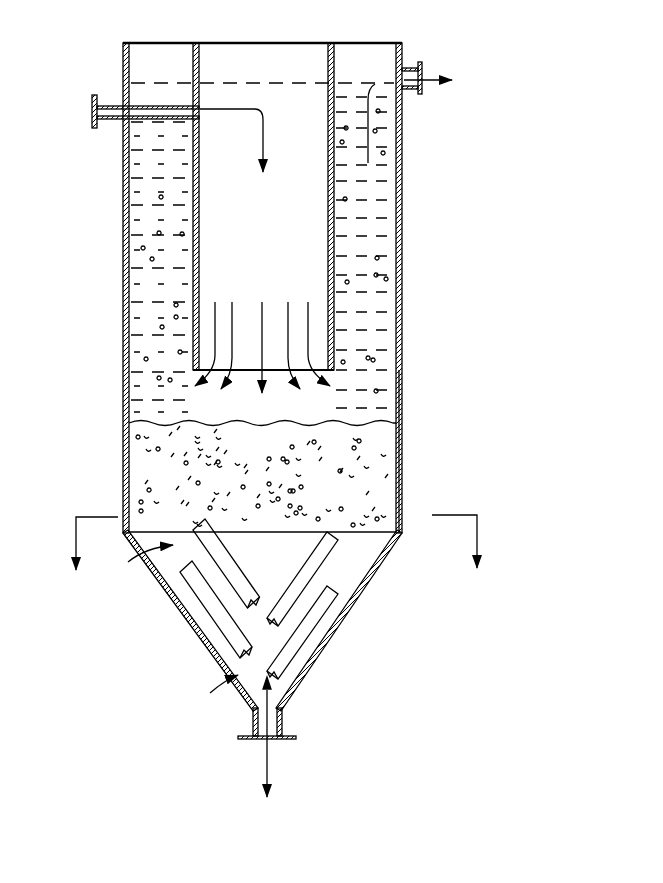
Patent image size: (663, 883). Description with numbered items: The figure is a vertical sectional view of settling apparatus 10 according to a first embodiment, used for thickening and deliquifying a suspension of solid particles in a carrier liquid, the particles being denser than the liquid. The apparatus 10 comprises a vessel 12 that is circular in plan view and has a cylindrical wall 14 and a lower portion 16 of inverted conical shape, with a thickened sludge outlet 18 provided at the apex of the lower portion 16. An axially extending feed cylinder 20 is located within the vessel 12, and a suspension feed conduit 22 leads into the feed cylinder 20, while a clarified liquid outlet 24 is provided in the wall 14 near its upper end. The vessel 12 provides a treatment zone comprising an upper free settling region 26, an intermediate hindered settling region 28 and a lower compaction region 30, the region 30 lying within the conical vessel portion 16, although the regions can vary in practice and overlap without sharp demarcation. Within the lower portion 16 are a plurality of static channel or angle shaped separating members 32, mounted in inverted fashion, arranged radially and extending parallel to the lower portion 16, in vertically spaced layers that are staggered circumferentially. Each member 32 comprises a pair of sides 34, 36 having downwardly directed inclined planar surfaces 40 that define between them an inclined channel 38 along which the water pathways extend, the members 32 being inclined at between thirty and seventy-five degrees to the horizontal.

The settling apparatus 10 is at (540, 191).
The vessel 12 is at (415, 306).
The cylindrical wall 14 is at (403, 371).
The lower portion 16 is at (350, 606).
The thickened sludge outlet 18 is at (284, 720).
The feed cylinder 20 is at (337, 201).
The suspension feed conduit 22 is at (108, 122).
The clarified liquid outlet 24 is at (410, 67).
The upper free settling region 26 is at (178, 240).
The intermediate hindered settling region 28 is at (198, 462).
The lower compaction region 30 is at (126, 566).
The separating members 32 is at (189, 600).
The side 34 is at (226, 622).
The side 36 is at (303, 618).
The inclined channel 38 is at (250, 701).
The inclined planar surfaces 40 is at (272, 690).